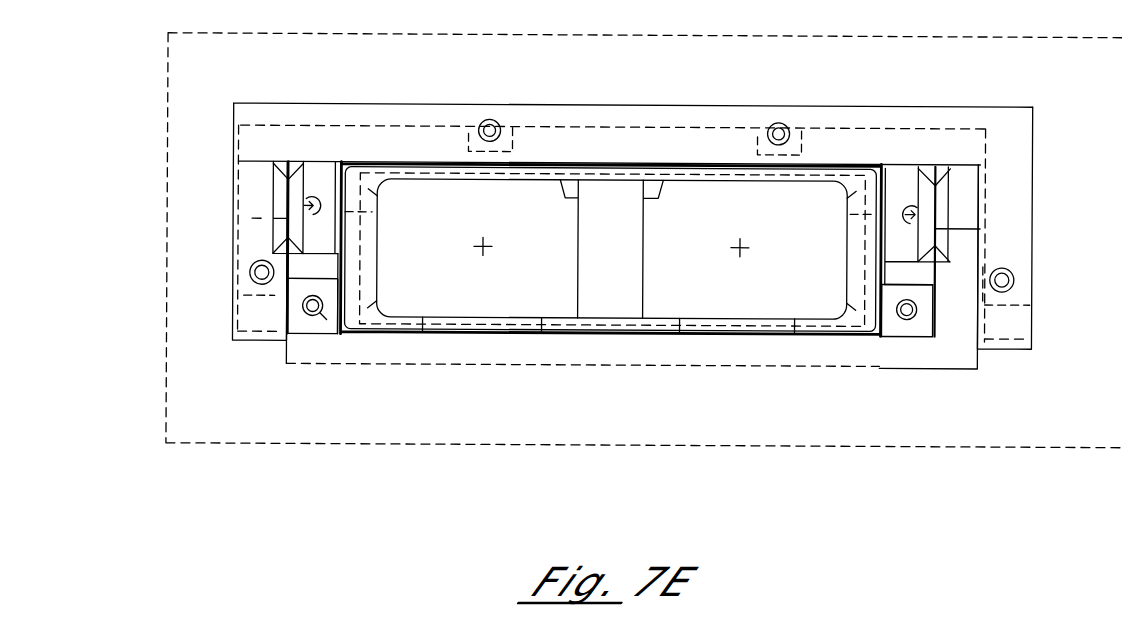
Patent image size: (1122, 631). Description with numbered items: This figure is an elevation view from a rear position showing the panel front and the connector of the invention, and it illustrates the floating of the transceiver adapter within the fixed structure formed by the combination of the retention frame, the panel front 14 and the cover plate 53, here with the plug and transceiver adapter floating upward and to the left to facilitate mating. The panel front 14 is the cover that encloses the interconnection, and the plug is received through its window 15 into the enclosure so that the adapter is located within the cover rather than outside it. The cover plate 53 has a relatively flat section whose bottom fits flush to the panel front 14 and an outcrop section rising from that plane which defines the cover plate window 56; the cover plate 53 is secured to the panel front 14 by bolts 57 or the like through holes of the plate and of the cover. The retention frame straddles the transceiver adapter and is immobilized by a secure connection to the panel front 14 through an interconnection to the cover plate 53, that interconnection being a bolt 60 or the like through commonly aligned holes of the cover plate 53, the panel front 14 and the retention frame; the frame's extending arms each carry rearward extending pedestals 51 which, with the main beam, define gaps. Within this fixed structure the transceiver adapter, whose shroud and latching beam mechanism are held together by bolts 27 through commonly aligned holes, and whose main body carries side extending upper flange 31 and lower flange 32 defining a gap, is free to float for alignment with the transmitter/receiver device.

The panel front 14 is at (158, 61).
The window 15 is at (578, 366).
The bolts 27 is at (268, 193).
The upper flange 31 is at (312, 165).
The lower flange 32 is at (304, 340).
The pedestals 51 is at (266, 251).
The cover plate 53 is at (862, 102).
The cover plate window 56 is at (847, 345).
The bolts 57 is at (490, 120).
The bolt 60 is at (250, 276).